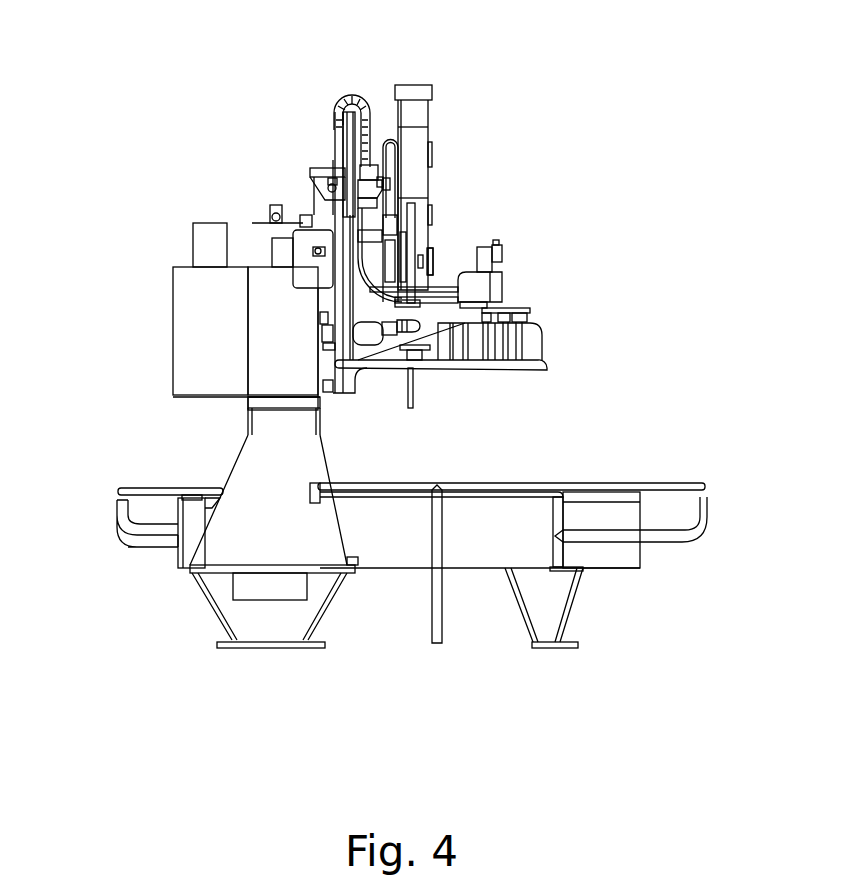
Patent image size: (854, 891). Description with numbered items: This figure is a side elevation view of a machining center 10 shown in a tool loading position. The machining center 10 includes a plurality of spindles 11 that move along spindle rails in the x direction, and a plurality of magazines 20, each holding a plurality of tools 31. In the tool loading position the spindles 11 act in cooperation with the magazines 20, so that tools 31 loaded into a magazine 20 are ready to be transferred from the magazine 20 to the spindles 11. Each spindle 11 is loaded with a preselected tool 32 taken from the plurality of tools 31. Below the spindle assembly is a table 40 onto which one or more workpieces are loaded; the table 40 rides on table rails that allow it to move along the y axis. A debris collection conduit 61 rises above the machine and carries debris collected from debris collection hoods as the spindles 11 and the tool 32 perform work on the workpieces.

The machining center 10 is at (140, 430).
The debris collection conduit 61 is at (417, 92).
The magazine 20 is at (527, 311).
The tools 31 is at (508, 350).
The spindle 11 is at (425, 352).
The preselected tool 32 is at (413, 392).
The table 40 is at (472, 542).